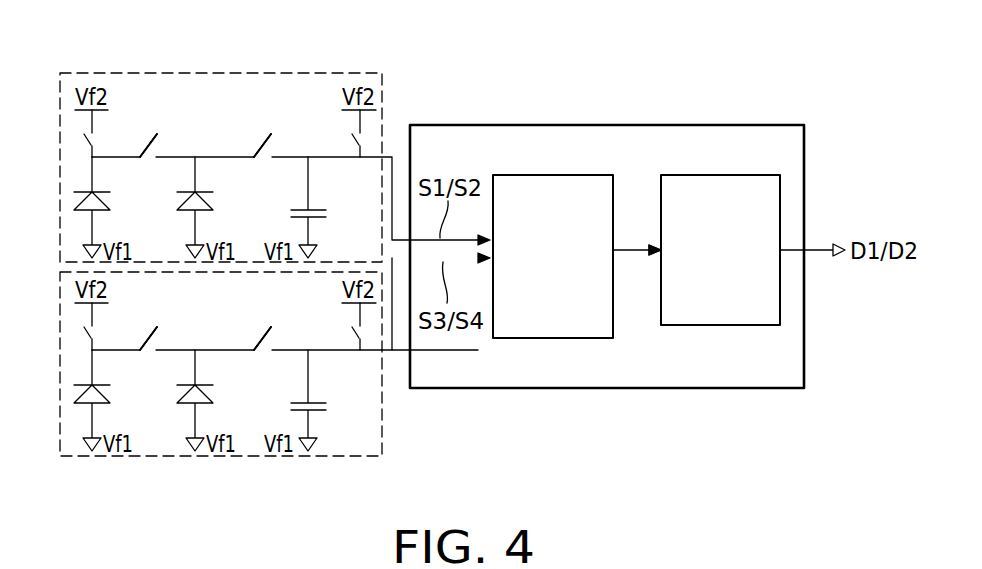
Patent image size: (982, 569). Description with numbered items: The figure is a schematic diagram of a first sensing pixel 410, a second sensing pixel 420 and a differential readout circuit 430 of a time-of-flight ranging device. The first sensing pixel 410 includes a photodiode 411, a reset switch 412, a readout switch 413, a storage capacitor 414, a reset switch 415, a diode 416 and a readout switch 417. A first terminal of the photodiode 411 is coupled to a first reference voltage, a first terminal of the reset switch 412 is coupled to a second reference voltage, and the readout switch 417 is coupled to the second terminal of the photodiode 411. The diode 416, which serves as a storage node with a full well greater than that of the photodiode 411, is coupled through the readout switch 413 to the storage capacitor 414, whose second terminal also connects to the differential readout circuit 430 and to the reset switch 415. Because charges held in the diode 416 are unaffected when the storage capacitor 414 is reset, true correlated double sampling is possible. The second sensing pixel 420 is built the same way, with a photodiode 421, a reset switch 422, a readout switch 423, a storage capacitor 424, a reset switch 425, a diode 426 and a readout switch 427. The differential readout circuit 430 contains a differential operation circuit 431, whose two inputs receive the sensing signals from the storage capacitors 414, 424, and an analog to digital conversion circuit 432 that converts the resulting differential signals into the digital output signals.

The first sensing pixel 410 is at (187, 72).
The photodiode 411 is at (78, 200).
The reset switch 412 is at (84, 139).
The readout switch 413 is at (263, 162).
The storage capacitor 414 is at (332, 212).
The reset switch 415 is at (369, 140).
The diode 416 is at (180, 196).
The readout switch 417 is at (158, 148).
The second sensing pixel 420 is at (157, 457).
The photodiode 421 is at (78, 393).
The reset switch 422 is at (84, 332).
The readout switch 423 is at (263, 355).
The storage capacitor 424 is at (332, 405).
The reset switch 425 is at (370, 331).
The diode 426 is at (180, 389).
The readout switch 427 is at (158, 341).
The differential readout circuit 430 is at (755, 124).
The differential operation circuit 431 is at (548, 174).
The analog to digital conversion circuit 432 is at (720, 174).